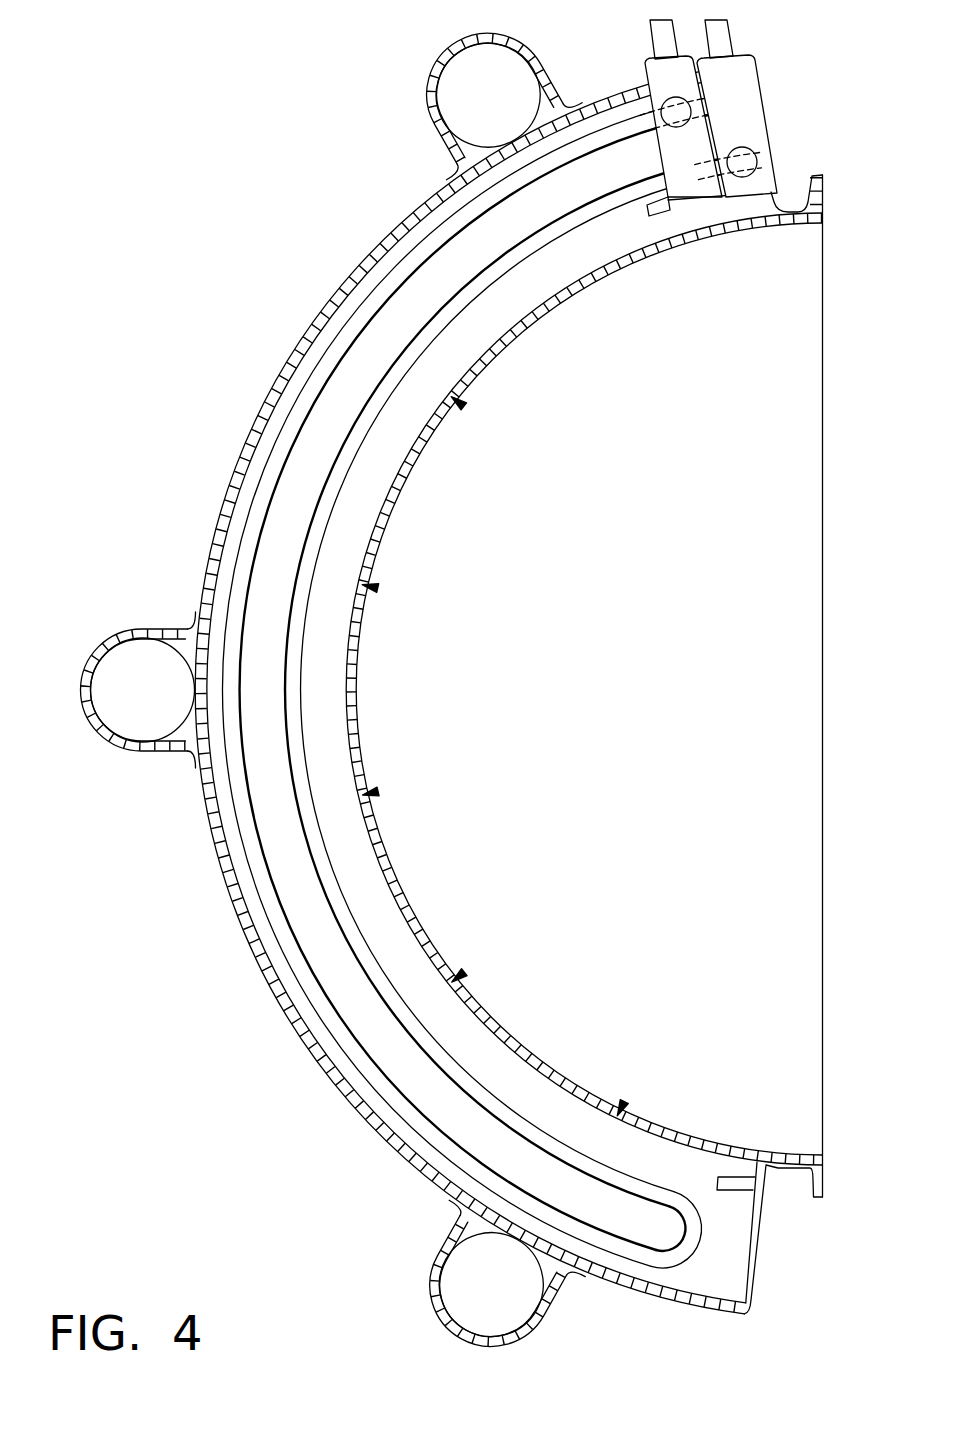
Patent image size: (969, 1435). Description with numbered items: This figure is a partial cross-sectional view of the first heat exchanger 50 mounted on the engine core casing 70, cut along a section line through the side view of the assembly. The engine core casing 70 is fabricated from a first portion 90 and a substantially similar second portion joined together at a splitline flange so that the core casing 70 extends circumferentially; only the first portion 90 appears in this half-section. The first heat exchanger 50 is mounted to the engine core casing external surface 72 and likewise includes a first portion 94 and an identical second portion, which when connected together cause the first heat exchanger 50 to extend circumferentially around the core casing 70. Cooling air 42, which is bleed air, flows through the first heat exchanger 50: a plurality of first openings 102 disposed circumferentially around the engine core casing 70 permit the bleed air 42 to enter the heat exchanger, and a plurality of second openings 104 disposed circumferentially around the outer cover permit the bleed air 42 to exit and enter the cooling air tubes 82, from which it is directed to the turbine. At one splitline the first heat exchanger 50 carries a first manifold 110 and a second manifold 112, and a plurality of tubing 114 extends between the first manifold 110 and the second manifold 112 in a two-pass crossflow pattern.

The cooling air 42 is at (467, 404).
The first heat exchanger 50 is at (580, 98).
The engine core casing 70 is at (832, 190).
The engine core casing external surface 72 is at (788, 206).
The cooling air tubes 82 is at (433, 88).
The first portion 90 is at (545, 310).
The first portion 94 is at (383, 1140).
The first openings 102 is at (641, 258).
The second openings 104 is at (518, 135).
The first manifold 110 is at (668, 100).
The second manifold 112 is at (743, 147).
The tubing 114 is at (400, 260).